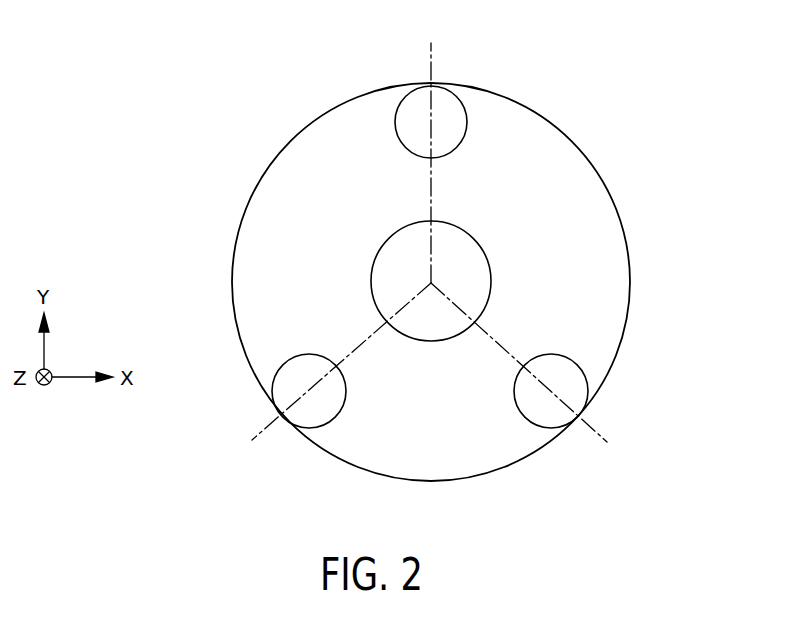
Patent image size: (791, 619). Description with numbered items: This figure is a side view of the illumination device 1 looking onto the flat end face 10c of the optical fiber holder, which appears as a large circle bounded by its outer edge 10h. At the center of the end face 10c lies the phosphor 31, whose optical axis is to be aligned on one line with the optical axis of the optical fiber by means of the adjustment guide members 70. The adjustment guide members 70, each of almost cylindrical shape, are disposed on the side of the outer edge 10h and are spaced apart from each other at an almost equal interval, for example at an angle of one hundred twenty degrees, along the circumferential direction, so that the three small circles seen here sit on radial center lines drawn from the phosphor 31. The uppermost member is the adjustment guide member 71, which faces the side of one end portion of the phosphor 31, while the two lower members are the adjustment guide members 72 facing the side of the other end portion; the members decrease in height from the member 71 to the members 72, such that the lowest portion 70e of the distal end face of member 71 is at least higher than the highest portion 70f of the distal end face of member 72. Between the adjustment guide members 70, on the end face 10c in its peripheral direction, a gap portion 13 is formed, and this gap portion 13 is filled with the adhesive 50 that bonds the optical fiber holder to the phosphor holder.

The illumination device 1 is at (688, 117).
The outer edge 10h is at (574, 140).
The end face 10c is at (573, 175).
The adhesive 50 is at (607, 230).
The gap portion 13 is at (612, 293).
The phosphor 31 is at (431, 333).
The adjustment guide members 70 is at (479, 288).
The adjustment guide member 71 is at (468, 120).
The adjustment guide members 72 is at (302, 418).
The lowest portion 70e is at (433, 158).
The highest portion 70f is at (551, 354).